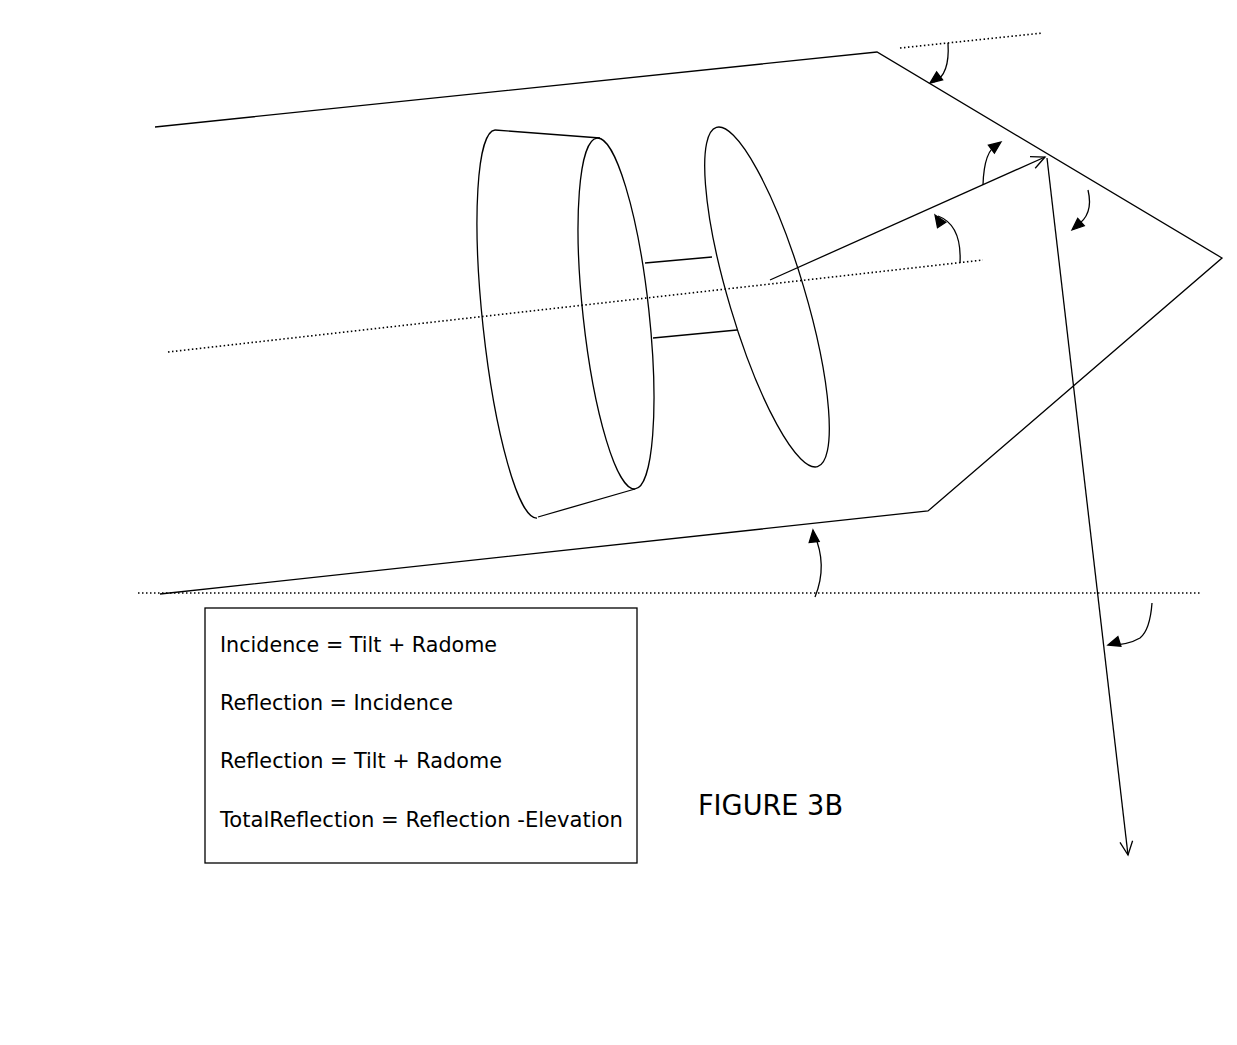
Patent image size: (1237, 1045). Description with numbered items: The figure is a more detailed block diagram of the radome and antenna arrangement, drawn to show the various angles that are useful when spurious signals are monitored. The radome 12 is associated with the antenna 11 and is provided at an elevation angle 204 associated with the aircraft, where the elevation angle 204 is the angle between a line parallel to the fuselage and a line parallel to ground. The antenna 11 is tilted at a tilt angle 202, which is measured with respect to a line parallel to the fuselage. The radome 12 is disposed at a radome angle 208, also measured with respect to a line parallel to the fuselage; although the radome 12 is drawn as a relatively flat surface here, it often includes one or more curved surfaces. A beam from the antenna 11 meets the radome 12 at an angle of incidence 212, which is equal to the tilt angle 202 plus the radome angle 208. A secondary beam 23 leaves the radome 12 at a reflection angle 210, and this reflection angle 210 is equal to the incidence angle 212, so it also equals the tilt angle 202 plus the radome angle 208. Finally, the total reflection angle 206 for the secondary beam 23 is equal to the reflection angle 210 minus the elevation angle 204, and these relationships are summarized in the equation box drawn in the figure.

The antenna 11 is at (807, 310).
The radome 12 is at (1115, 352).
The secondary beam 23 is at (1092, 495).
The tilt angle 202 is at (960, 250).
The elevation angle 204 is at (813, 557).
The total reflection angle 206 is at (1140, 633).
The radome angle 208 is at (957, 57).
The reflection angle 210 is at (1095, 220).
The angle of incidence 212 is at (983, 147).